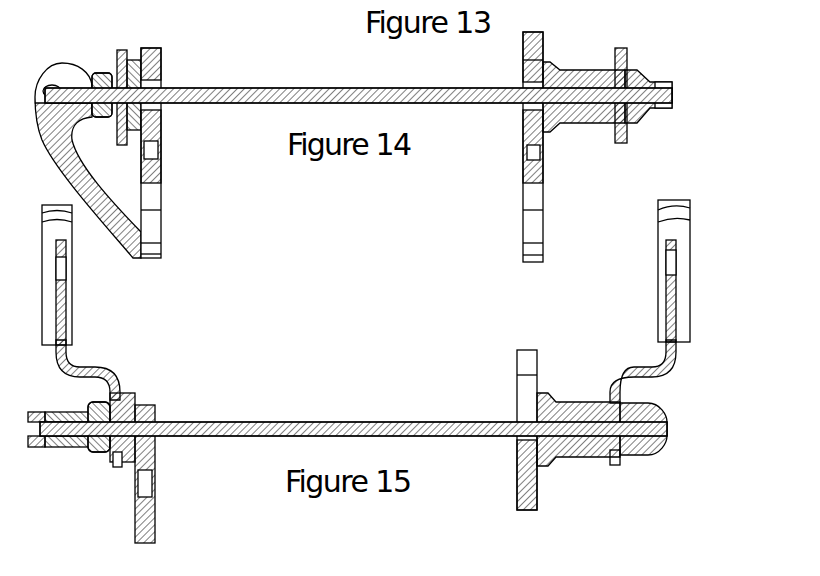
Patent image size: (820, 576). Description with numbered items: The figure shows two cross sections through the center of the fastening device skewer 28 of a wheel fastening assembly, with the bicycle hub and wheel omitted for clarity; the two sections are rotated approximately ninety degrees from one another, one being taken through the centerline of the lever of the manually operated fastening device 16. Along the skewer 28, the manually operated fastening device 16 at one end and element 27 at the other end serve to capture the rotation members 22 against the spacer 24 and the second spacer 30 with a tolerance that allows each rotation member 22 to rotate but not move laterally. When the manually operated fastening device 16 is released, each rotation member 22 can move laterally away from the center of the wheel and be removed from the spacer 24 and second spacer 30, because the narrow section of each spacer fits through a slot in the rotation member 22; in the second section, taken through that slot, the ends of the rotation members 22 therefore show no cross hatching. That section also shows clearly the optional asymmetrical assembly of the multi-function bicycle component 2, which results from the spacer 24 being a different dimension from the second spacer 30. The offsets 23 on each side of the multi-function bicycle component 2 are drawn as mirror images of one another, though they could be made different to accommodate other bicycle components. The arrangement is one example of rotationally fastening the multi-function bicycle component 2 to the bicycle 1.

In FIG. 14, the bicycle 1 is at (150, 48).
In FIG. 15, the bicycle 1 is at (156, 528).
In FIG. 15, the multi-function bicycle component 2 is at (50, 238).
In FIG. 14, the manually operated fastening device 16 is at (108, 66).
In FIG. 15, the manually operated fastening device 16 is at (97, 404).
In FIG. 14, the rotation member 22 is at (122, 50).
In FIG. 15, the rotation member 22 is at (118, 462).
In FIG. 15, the offset 23 is at (88, 372).
In FIG. 14, the spacer 24 is at (567, 73).
In FIG. 15, the spacer 24 is at (570, 402).
In FIG. 14, the element 27 is at (655, 78).
In FIG. 15, the element 27 is at (650, 402).
In FIG. 14, the fastening device skewer 28 is at (198, 88).
In FIG. 15, the fastening device skewer 28 is at (215, 422).
In FIG. 14, the second spacer 30 is at (160, 113).
In FIG. 15, the second spacer 30 is at (130, 395).